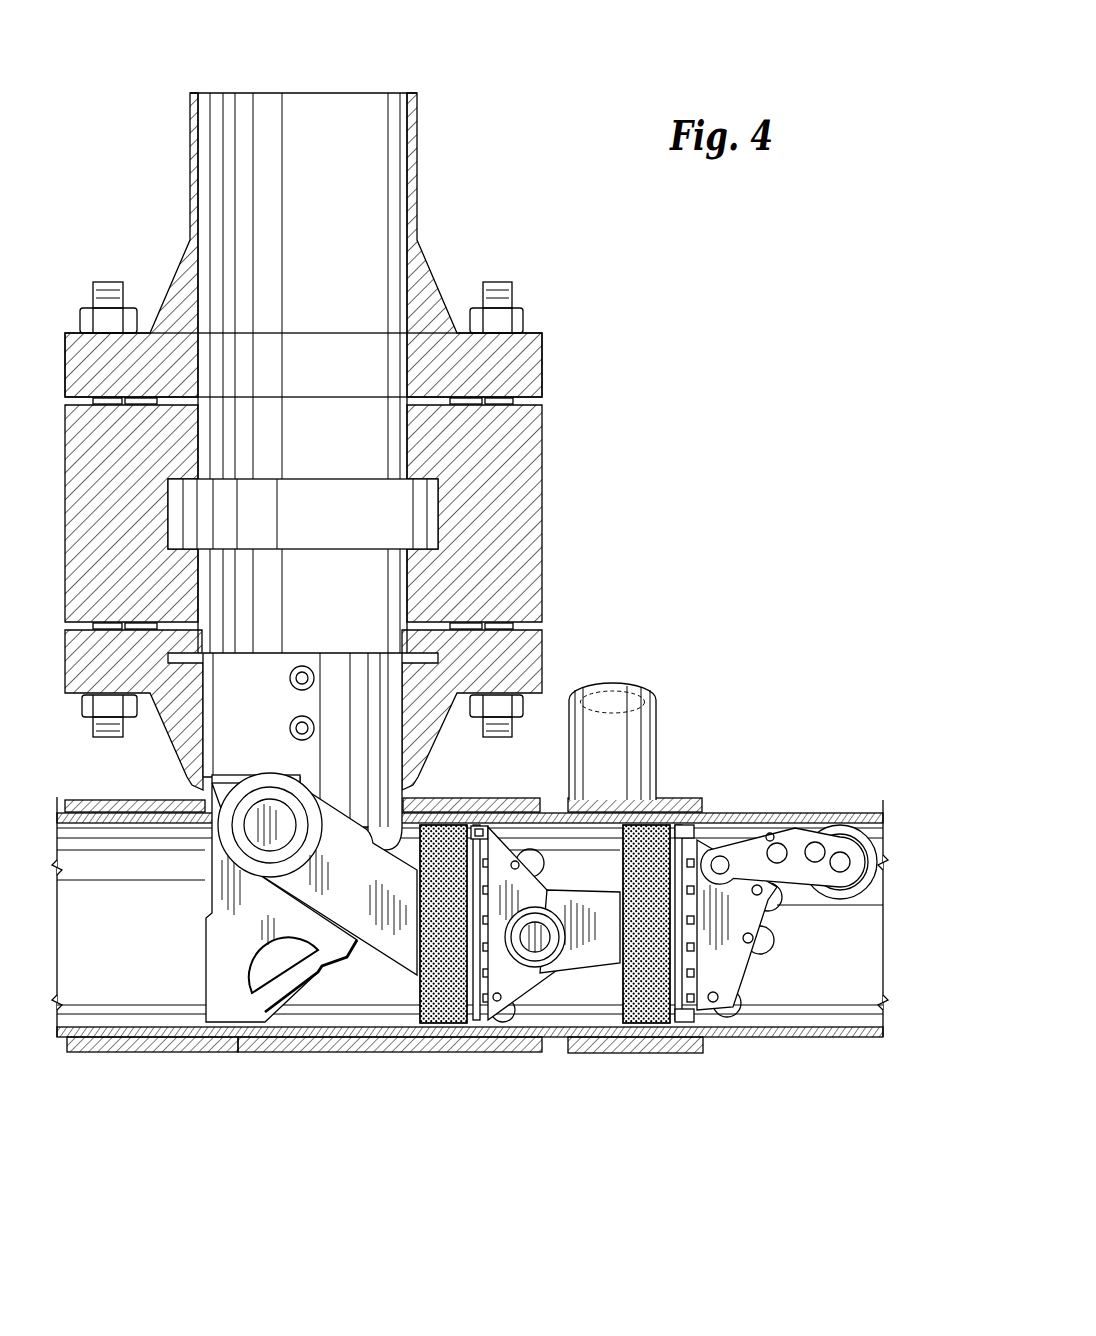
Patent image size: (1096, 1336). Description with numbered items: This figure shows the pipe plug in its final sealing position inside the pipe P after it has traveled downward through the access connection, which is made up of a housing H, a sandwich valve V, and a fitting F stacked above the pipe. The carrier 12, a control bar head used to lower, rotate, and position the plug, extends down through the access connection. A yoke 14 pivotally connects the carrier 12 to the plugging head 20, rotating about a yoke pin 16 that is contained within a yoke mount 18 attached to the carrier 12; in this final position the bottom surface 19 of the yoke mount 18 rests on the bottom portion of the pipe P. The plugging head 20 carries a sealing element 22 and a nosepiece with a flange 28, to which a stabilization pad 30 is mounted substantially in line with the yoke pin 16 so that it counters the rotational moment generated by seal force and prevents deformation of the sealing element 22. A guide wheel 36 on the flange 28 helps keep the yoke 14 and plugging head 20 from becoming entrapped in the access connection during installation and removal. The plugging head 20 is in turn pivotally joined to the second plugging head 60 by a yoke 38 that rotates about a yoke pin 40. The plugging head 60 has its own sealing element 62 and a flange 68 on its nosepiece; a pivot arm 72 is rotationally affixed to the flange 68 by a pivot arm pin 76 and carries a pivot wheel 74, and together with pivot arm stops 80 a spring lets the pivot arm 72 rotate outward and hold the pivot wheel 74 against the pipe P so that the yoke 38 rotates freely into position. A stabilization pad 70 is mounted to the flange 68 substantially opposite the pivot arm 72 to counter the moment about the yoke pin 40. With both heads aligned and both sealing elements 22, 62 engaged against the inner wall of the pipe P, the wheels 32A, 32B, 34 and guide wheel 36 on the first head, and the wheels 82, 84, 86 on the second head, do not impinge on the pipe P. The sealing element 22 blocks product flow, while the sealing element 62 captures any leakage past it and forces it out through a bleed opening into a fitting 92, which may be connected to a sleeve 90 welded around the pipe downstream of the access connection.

The carrier 12 is at (242, 720).
The yoke 14 is at (383, 938).
The yoke pin 16 is at (253, 835).
The yoke mount 18 is at (225, 952).
The bottom surface 19 is at (238, 1053).
The plugging head 20 is at (395, 1056).
The sealing element 22 is at (442, 1010).
The flange 28 is at (533, 897).
The stabilization pad 30 is at (477, 837).
The wheel 32A is at (576, 1024).
The wheel 32B is at (576, 1024).
The wheel 34 is at (492, 1025).
The guide wheel 36 is at (530, 848).
The yoke 38 is at (593, 957).
The yoke pin 40 is at (540, 960).
The plugging head 60 is at (655, 1092).
The sealing element 62 is at (650, 1023).
The flange 68 is at (732, 963).
The stabilization pad 70 is at (690, 1022).
The pivot arm 72 is at (788, 837).
The pivot wheel 74 is at (845, 830).
The pivot arm pin 76 is at (724, 855).
The pivot arm stop 80 is at (703, 837).
The wheel 82 is at (778, 898).
The wheel 84 is at (770, 942).
The wheel 86 is at (733, 1010).
The sleeve 90 is at (669, 792).
The fitting 92 is at (638, 683).
The housing H is at (542, 350).
The sandwich valve V is at (542, 500).
The fitting F is at (542, 642).
The pipe P is at (815, 1040).